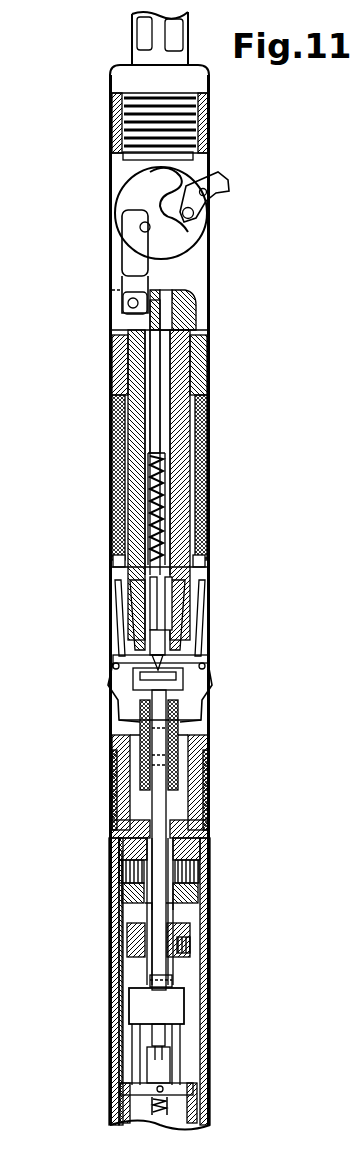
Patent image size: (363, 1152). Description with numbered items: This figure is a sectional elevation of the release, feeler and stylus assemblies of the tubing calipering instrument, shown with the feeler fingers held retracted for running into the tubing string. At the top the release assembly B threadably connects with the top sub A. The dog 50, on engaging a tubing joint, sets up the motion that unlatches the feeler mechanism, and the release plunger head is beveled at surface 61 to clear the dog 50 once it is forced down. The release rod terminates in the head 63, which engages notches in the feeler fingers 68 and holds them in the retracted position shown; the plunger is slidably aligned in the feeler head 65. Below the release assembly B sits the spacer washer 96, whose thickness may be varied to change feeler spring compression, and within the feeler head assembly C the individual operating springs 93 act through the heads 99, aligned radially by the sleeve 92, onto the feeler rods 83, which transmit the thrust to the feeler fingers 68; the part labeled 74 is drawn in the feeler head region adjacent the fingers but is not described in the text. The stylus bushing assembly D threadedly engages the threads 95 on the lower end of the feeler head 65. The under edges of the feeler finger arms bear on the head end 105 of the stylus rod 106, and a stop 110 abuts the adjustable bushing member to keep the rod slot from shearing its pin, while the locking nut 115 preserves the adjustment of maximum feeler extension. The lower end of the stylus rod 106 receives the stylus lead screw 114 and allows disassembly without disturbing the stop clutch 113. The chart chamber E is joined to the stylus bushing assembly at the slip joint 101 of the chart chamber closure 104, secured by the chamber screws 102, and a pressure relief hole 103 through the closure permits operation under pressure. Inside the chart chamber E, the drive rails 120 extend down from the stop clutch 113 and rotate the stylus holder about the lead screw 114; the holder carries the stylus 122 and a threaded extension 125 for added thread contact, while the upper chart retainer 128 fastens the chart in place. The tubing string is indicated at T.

The top sub A is at (102, 126).
The release assembly B is at (102, 266).
The feeler head assembly C is at (102, 520).
The stylus bushing assembly D is at (102, 790).
The chart chamber E is at (102, 1022).
The tool T is at (357, 769).
The dog 50 is at (228, 191).
The beveled surface 61 is at (196, 312).
The head of release rod 63 is at (165, 642).
The feeler head 65 is at (212, 745).
The feeler fingers 68 is at (200, 686).
The plate 74 is at (210, 666).
The feeler rods 83 is at (200, 618).
The sleeve 92 is at (212, 468).
The feeler finger operating springs 93 is at (212, 522).
The threads 95 is at (212, 792).
The spacer washer 96 is at (210, 397).
The heads of spring guides 99 is at (212, 565).
The slip joint 101 is at (212, 846).
The chamber screws 102 is at (200, 874).
The pressure relief hole 103 is at (120, 896).
The chart chamber closure 104 is at (200, 930).
The head end of stylus rod 105 is at (135, 673).
The stylus rod 106 is at (145, 690).
The stop 110 is at (166, 722).
The stop clutch 113 is at (172, 976).
The stylus lead screw 114 is at (160, 1030).
The locking nut 115 is at (200, 899).
The drive rails 120 is at (180, 1043).
The stylus 122 is at (168, 1103).
The threaded extension 125 is at (160, 1066).
The upper chart retainer 128 is at (205, 994).